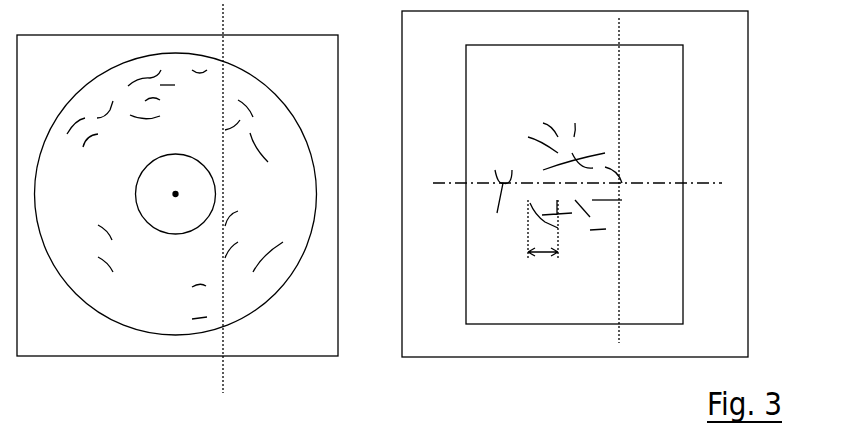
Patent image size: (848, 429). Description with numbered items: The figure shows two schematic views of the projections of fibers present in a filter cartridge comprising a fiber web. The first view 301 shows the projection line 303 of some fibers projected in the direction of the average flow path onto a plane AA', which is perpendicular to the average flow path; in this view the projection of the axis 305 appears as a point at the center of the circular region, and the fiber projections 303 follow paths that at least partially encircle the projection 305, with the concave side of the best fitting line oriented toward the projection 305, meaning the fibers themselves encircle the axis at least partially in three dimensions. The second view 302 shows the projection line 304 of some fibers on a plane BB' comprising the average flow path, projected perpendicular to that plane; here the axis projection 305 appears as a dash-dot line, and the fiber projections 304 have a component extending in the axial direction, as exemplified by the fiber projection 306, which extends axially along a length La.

The projection view on plane AA' 301 is at (177, 197).
The projection view on plane BB' 302 is at (575, 184).
The projection line of fibers on plane AA' 303 is at (262, 145).
The projection line of fibers on plane BB' 304 is at (622, 163).
The projection of the axis 305 is at (176, 194).
The projection of a fiber extending axially 306 is at (530, 203).